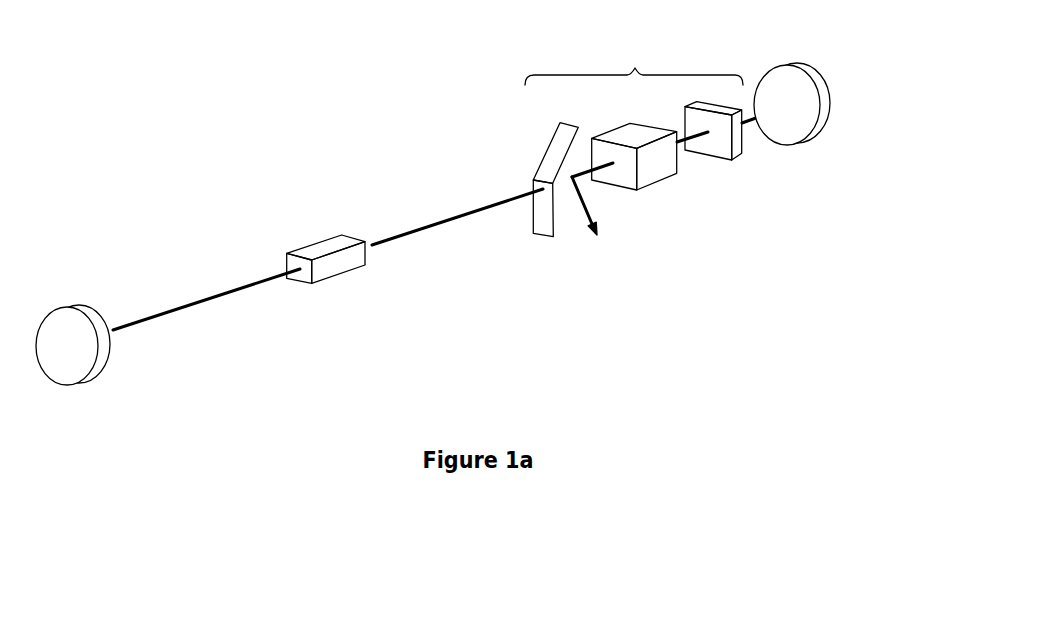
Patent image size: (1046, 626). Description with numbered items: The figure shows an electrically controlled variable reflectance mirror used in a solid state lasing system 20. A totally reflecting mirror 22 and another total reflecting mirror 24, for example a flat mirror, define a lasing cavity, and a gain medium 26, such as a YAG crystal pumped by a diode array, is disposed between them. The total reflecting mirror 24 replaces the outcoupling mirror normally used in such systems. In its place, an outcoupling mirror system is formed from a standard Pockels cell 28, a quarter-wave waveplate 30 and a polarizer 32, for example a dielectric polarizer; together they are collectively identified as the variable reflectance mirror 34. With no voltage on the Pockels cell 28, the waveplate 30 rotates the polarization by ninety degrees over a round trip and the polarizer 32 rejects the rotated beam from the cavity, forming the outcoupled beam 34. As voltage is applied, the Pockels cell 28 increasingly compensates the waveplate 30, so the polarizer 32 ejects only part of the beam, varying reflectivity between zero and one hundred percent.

The solid state lasing system 20 is at (853, 46).
The totally reflecting mirror 22 is at (102, 365).
The total reflecting mirror 24 is at (798, 122).
The gain medium 26 is at (343, 273).
The Pockels cell 28 is at (663, 168).
The λ/4 waveplate 30 is at (733, 155).
The polarizer 32 is at (548, 145).
The outcoupled beam 34 is at (601, 229).